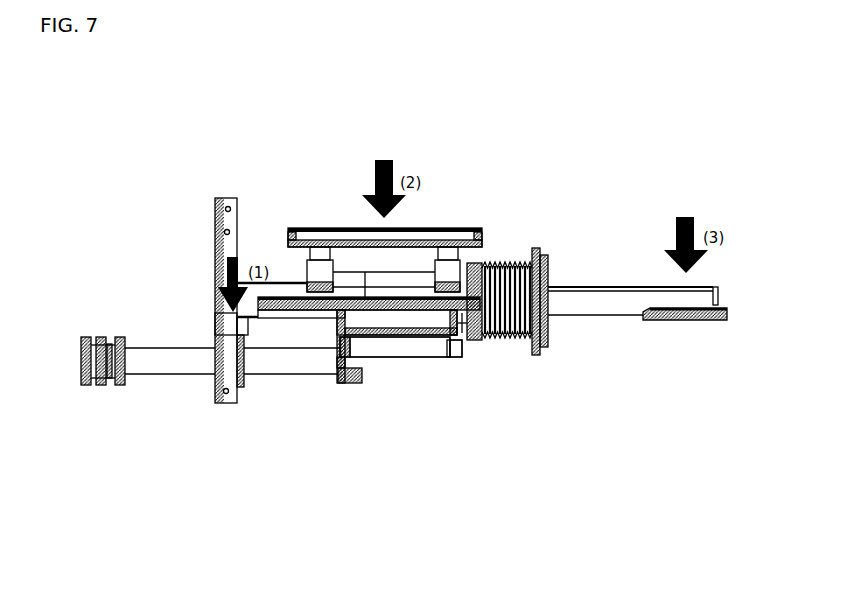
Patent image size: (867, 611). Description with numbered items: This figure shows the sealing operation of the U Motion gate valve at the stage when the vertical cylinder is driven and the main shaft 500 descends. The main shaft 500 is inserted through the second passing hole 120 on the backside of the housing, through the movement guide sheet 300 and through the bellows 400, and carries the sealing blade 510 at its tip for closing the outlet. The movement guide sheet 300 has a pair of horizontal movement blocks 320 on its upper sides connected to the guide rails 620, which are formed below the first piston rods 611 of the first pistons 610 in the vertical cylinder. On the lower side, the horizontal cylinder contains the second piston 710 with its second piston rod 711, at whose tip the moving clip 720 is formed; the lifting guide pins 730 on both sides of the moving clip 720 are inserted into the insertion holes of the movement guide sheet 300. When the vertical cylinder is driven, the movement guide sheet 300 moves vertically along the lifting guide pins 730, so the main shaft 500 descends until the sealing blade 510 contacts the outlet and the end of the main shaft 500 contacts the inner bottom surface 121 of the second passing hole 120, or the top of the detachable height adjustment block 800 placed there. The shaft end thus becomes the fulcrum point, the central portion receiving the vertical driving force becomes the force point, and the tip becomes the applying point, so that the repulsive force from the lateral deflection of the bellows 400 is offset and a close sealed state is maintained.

The second passing hole 120 is at (212, 243).
The inner bottom surface 121 is at (215, 312).
The movement guide sheet 300 is at (428, 313).
The horizontal movement block 320 is at (390, 322).
The bellows 400 is at (517, 338).
The main shaft 500 is at (625, 298).
The sealing blade 510 is at (688, 320).
The first piston 610 is at (348, 232).
The first piston rod 611 is at (312, 228).
The guide rail 620 is at (292, 315).
The second piston 710 is at (100, 385).
The second piston rod 711 is at (173, 357).
The moving clip 720 is at (415, 348).
The lifting guide pin 730 is at (343, 320).
The height adjustment block 800 is at (218, 393).